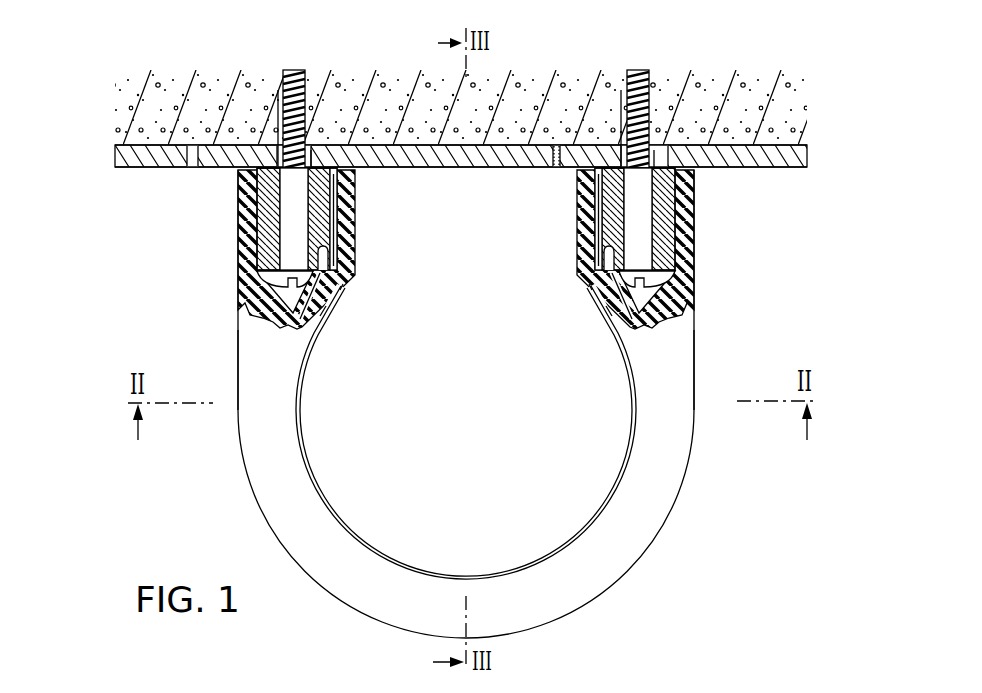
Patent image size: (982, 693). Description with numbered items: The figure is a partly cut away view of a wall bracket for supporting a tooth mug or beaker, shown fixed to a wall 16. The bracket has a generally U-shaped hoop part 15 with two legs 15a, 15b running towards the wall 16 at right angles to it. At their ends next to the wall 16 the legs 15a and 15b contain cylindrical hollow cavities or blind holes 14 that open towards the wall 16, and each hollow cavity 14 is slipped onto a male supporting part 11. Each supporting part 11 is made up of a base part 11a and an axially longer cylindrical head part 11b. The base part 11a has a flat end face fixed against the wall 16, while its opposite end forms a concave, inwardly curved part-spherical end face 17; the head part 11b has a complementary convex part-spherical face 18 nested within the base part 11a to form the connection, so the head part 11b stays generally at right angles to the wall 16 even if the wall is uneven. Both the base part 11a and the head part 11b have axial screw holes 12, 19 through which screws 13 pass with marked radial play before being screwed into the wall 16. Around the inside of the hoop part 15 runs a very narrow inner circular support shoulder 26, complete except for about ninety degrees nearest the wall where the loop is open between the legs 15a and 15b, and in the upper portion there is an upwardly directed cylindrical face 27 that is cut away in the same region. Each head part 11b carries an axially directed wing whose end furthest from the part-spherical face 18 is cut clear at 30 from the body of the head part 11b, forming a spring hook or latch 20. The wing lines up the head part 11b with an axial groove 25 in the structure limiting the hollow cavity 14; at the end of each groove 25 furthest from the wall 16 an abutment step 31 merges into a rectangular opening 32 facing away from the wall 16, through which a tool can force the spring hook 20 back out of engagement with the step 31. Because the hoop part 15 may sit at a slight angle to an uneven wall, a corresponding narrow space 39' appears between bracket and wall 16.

The male supporting part 11 is at (676, 160).
The base part 11a is at (675, 187).
The head part 11b is at (604, 230).
The screw hole 12 is at (621, 165).
The screw 13 is at (645, 70).
The hollow cavity 14 is at (674, 230).
The hoop part 15 is at (422, 563).
The leg 15a is at (258, 352).
The leg 15b is at (674, 352).
The wall 16 is at (737, 97).
The part-spherical end face 17 is at (676, 204).
The part-spherical face 18 is at (582, 185).
The screw hole 19 is at (652, 250).
The spring hook 20 is at (590, 290).
The axial groove 25 is at (596, 205).
The support shoulder 26 is at (333, 507).
The cylindrical face 27 is at (312, 456).
The cut-clear point 30 is at (609, 310).
The abutment step 31 is at (585, 263).
The rectangular opening 32 is at (584, 282).
The narrow space 39' is at (544, 102).